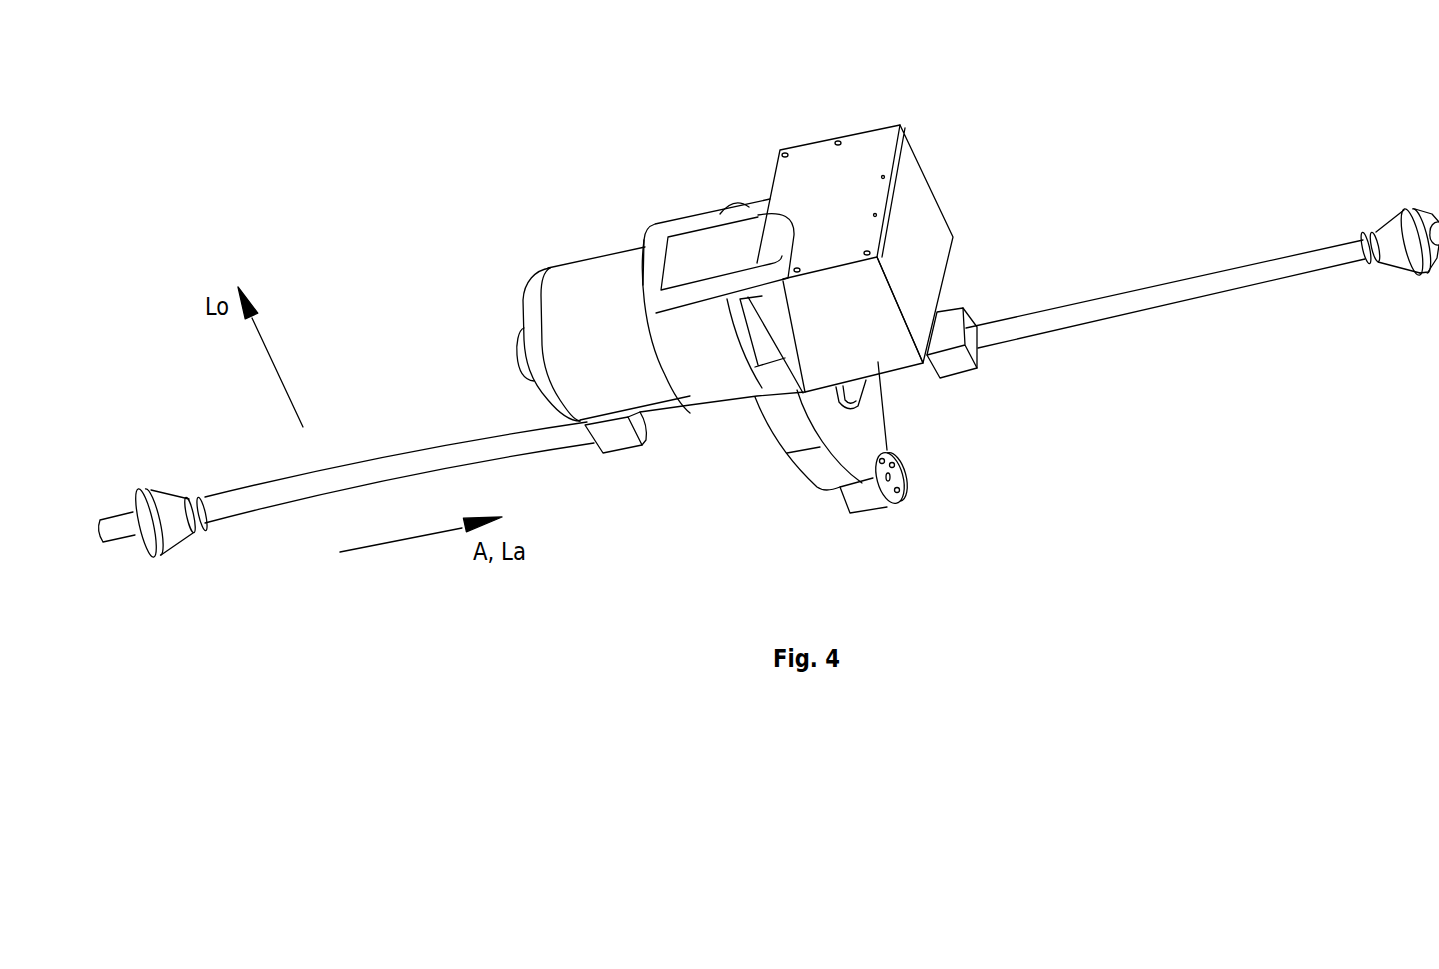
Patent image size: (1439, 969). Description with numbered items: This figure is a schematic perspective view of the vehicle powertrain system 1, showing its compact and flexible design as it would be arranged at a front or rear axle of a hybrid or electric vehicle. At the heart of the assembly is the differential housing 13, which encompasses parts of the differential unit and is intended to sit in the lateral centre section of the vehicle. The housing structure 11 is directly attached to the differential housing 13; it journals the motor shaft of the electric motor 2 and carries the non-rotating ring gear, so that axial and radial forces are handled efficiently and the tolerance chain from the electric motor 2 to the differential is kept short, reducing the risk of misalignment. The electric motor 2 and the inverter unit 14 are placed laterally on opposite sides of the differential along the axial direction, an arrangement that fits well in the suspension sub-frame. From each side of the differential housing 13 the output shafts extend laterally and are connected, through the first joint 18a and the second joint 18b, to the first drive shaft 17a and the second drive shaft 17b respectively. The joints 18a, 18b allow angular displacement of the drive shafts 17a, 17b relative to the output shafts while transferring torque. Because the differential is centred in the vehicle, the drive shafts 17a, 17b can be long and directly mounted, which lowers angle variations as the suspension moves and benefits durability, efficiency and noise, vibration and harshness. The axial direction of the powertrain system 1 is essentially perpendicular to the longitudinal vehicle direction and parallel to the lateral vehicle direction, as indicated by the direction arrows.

The vehicle powertrain system 1 is at (540, 85).
The electric motor 2 is at (598, 298).
The housing structure 11 is at (712, 373).
The differential housing 13 is at (797, 433).
The inverter unit 14 is at (915, 222).
The first drive shaft 17a is at (1141, 301).
The second drive shaft 17b is at (420, 463).
The first joint 18a is at (948, 327).
The second joint 18b is at (618, 433).